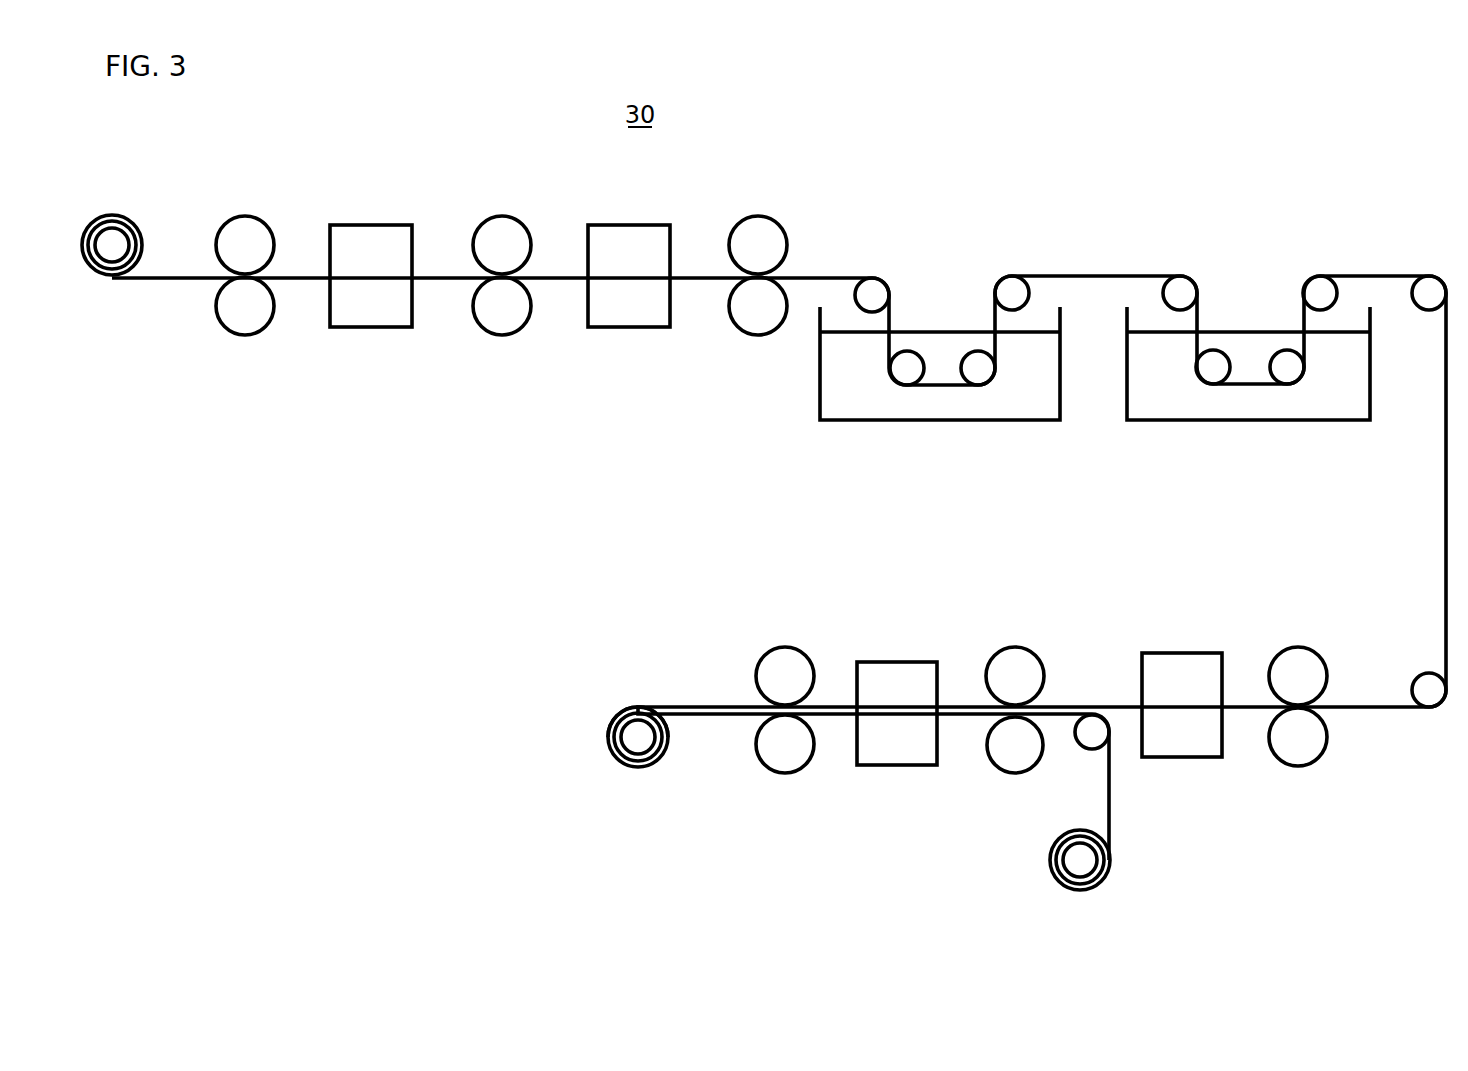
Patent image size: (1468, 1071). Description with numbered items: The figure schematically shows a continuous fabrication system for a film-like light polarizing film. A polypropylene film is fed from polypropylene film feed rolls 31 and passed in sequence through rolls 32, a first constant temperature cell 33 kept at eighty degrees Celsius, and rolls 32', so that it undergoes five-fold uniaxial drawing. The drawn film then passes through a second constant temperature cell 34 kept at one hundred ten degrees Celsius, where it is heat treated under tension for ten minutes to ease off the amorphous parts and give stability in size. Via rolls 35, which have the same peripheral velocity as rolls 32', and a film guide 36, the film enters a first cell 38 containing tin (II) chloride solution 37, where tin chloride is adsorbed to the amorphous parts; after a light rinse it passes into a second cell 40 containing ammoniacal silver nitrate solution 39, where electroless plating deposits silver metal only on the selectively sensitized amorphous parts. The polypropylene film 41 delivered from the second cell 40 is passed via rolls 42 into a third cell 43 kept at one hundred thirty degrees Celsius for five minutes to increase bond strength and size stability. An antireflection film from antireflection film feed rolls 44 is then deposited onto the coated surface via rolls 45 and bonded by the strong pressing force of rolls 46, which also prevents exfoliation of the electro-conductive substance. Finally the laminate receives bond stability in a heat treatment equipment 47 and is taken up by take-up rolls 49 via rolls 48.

The polypropylene film feed rolls 31 is at (110, 245).
The rolls 32 is at (245, 240).
The rolls 32' is at (502, 240).
The first constant temperature cell 33 is at (367, 318).
The second constant temperature cell 34 is at (628, 316).
The rolls 35 is at (758, 238).
The film guide 36 is at (1012, 290).
The tin (II) chloride solution 37 is at (942, 410).
The first cell 38 is at (1030, 420).
The ammoniacal silver nitrate solution 39 is at (1165, 400).
The second cell 40 is at (1235, 420).
The polypropylene film 41 is at (1444, 590).
The rolls 42 is at (1300, 665).
The third cell 43 is at (1188, 733).
The antireflection film feed rolls 44 is at (1092, 862).
The rolls 45 is at (1095, 727).
The rolls 46 is at (1020, 668).
The heat treatment equipment 47 is at (897, 750).
The rolls 48 is at (785, 665).
The take-up rolls 49 is at (636, 745).